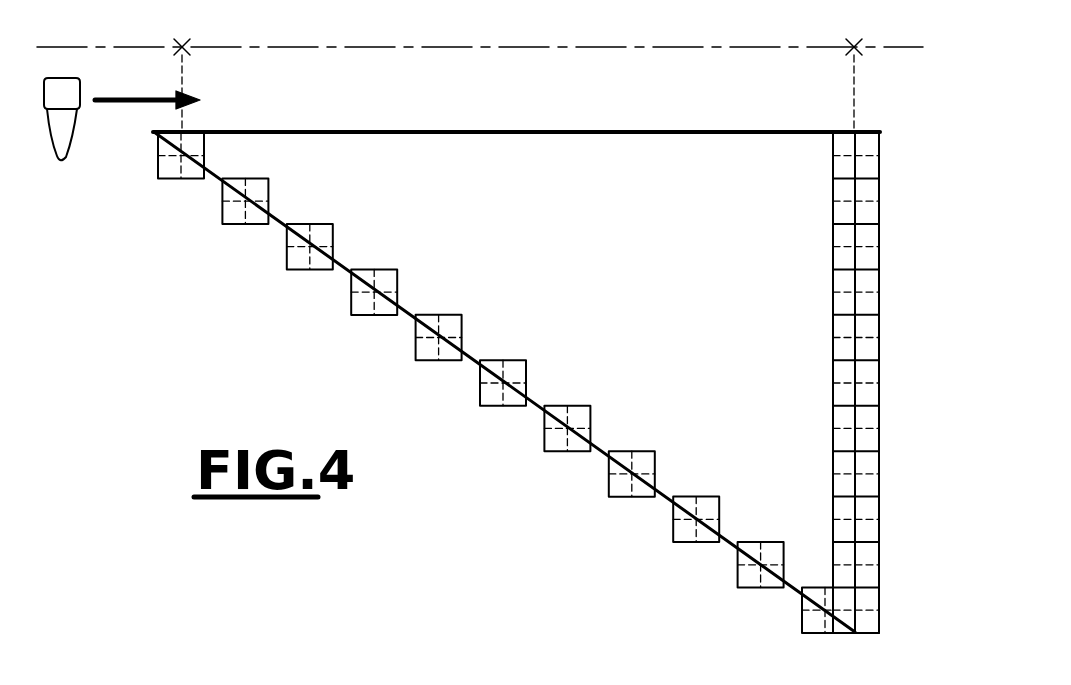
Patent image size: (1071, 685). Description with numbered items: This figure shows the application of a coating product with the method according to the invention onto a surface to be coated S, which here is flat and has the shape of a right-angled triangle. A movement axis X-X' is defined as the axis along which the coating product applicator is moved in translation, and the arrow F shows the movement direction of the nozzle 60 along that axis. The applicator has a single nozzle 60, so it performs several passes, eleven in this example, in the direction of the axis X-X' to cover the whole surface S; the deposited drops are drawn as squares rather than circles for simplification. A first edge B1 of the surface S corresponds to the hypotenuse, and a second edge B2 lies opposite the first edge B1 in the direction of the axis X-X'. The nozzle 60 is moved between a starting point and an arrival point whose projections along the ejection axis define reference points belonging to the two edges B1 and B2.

The nozzle 60 is at (56, 91).
The arrow showing movement direction of the nozzle F is at (161, 101).
The movement axis X-X' X is at (480, 73).
The surface to be coated S is at (504, 382).
The first edge B1 is at (384, 304).
The second edge B2 is at (857, 277).